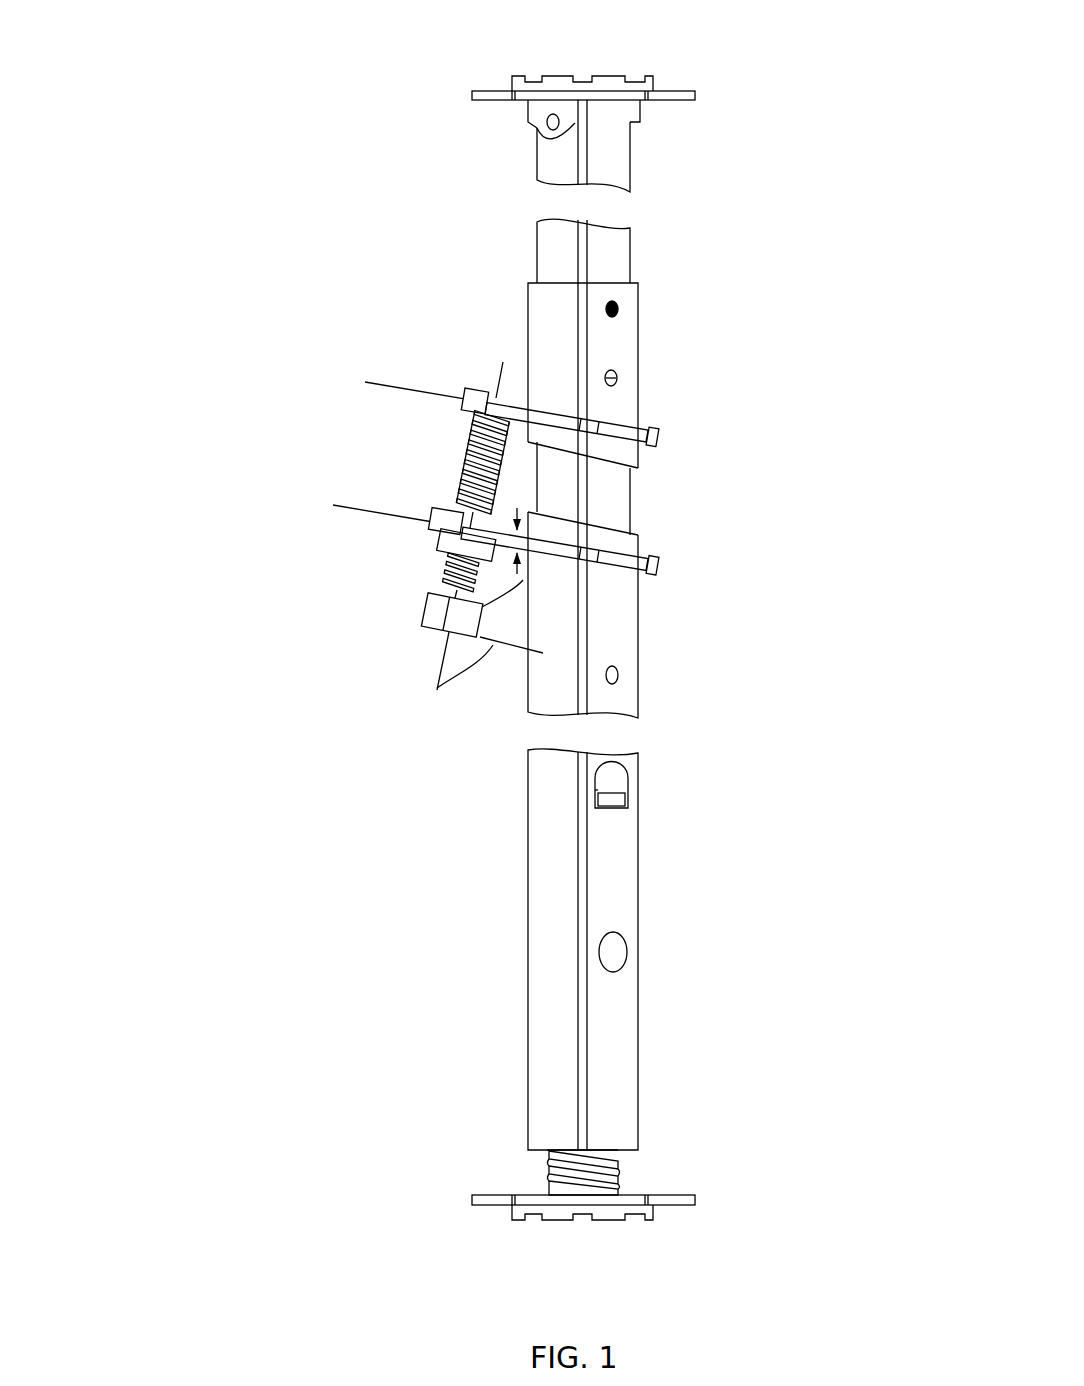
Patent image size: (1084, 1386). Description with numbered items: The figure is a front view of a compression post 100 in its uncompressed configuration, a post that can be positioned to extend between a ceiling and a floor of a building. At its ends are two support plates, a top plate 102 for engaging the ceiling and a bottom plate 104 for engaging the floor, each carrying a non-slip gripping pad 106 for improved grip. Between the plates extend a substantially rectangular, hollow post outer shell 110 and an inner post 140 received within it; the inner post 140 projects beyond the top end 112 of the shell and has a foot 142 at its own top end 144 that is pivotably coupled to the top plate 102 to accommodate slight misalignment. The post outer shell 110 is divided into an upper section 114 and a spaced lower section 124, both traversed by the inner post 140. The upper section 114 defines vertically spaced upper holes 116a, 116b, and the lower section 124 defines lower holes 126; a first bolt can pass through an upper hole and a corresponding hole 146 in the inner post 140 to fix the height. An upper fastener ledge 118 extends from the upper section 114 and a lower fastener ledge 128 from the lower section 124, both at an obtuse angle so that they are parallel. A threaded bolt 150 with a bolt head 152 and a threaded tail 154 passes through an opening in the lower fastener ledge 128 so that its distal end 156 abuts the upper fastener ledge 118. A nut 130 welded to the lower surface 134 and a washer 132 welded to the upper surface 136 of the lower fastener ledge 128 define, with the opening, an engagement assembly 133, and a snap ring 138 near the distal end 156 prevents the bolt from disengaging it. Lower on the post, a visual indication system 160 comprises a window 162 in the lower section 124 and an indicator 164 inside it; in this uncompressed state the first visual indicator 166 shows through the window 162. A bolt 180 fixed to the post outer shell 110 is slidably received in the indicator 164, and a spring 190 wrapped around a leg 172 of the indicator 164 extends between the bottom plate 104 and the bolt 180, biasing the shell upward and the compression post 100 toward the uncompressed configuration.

The compression post 100 is at (332, 80).
The top plate 102 is at (672, 86).
The bottom plate 104 is at (668, 1212).
The gripping pad 106 is at (608, 75).
The post outer shell 110 is at (524, 863).
The top end 112 is at (550, 284).
The upper section 114 is at (613, 358).
The upper hole 116a is at (628, 380).
The upper hole 116b is at (627, 305).
The upper fastener ledge 118 is at (480, 392).
The lower section 124 is at (615, 648).
The lower hole 126 is at (627, 677).
The lower fastener ledge 128 is at (447, 542).
The nut 130 is at (446, 562).
The washer 132 is at (443, 510).
The engagement assembly 133 is at (392, 528).
The lower surface 134 is at (523, 582).
The upper surface 136 is at (518, 500).
The snap ring 138 is at (463, 415).
The inner post 140 is at (637, 491).
The foot 142 is at (548, 128).
The top end 144 is at (648, 106).
The hole 146 is at (620, 379).
The threaded bolt 150 is at (437, 473).
The bolt head 152 is at (432, 611).
The threaded tail 154 is at (473, 455).
The distal end 156 is at (503, 362).
The visual indication system 160 is at (565, 781).
The window 162 is at (595, 791).
The indicator 164 is at (628, 781).
The first visual indicator 166 is at (614, 791).
The leg 172 is at (585, 1150).
The bolt 180 is at (613, 952).
The spring 190 is at (610, 1171).